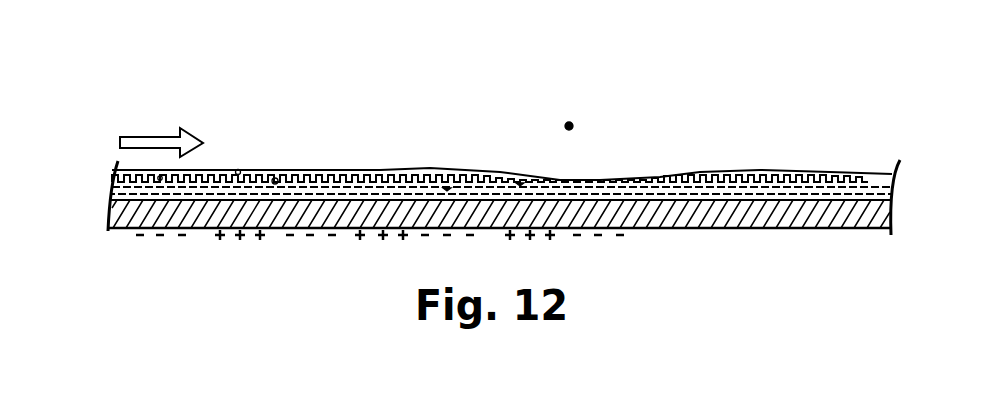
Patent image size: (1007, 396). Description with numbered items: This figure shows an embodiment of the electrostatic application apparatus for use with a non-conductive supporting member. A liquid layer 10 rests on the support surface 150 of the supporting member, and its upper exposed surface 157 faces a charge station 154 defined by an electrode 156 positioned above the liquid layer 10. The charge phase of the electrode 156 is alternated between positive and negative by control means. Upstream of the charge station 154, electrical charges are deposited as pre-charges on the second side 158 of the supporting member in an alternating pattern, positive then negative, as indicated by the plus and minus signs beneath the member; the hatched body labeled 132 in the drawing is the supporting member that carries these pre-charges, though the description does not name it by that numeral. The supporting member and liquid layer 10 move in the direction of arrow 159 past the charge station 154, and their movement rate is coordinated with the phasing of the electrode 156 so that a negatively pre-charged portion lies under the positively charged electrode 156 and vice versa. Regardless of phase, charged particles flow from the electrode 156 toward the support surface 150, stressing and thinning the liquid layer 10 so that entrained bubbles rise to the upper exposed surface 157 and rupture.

The liquid layer 10 is at (110, 184).
The substrate 132 is at (110, 217).
The support surface 150 is at (238, 200).
The charge station 154 is at (542, 131).
The electrode 156 is at (571, 122).
The upper exposed surface 157 is at (327, 177).
The second side 158 is at (322, 232).
The arrow 159 is at (152, 137).